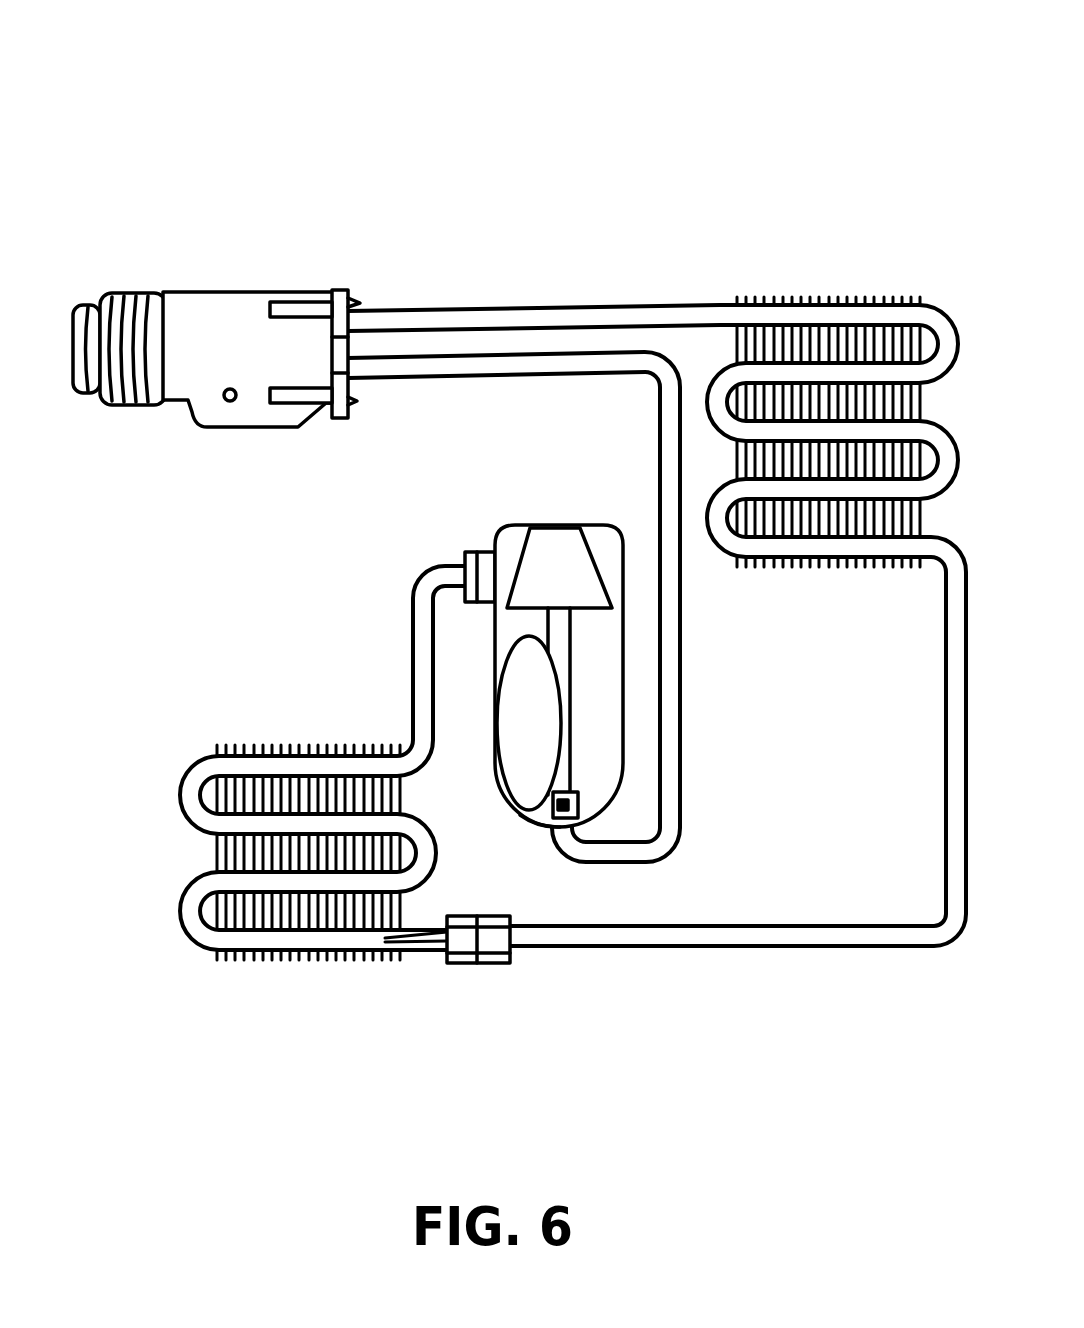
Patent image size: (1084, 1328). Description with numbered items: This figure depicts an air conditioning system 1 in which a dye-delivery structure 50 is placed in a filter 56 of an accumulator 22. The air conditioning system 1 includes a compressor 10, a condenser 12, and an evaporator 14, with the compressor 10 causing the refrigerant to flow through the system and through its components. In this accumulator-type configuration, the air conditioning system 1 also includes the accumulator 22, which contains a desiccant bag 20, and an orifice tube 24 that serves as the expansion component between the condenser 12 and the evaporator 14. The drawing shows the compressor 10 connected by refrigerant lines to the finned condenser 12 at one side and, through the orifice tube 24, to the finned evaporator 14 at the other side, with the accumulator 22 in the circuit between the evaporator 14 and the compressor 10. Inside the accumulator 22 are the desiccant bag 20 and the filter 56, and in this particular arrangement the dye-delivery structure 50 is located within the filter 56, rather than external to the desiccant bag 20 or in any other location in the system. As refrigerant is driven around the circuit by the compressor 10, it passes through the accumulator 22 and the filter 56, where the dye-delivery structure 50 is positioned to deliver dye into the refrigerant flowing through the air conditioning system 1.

The air conditioning system 1 is at (553, 521).
The compressor 10 is at (255, 290).
The condenser 12 is at (810, 300).
The evaporator 14 is at (312, 962).
The desiccant bag 20 is at (517, 715).
The accumulator 22 is at (526, 675).
The orifice tube 24 is at (490, 965).
The dye-delivery structure 50 is at (578, 802).
The filter 56 is at (541, 820).